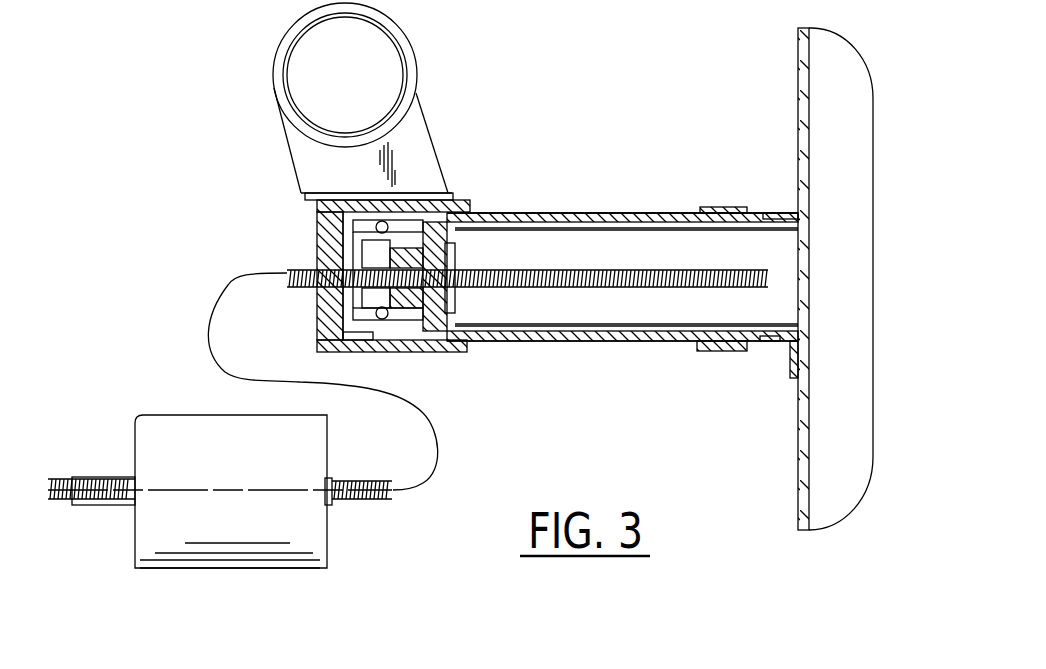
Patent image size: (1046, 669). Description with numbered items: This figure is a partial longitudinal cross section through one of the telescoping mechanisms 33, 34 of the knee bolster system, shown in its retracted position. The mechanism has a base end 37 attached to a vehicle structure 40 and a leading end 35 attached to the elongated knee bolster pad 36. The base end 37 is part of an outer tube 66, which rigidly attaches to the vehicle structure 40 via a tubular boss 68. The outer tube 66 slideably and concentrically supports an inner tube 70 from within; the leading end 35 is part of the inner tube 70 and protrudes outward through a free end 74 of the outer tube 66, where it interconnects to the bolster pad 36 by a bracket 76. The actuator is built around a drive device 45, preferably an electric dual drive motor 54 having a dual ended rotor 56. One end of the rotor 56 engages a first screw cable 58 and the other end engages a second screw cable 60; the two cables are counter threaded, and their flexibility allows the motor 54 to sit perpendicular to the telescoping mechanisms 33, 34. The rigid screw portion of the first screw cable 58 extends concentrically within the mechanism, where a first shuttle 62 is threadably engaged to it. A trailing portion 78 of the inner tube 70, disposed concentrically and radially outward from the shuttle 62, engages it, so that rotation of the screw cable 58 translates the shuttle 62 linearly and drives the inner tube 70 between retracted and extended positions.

The first telescoping mechanism 33 is at (640, 212).
The second telescoping mechanism 34 is at (640, 212).
The leading end 35 is at (780, 233).
The knee bolster pad 36 is at (845, 70).
The base end 37 is at (360, 338).
The vehicle structure 40 is at (412, 107).
The drive device 45 is at (211, 575).
The electric dual drive motor 54 is at (133, 543).
The dual ended rotor 56 is at (95, 477).
The first screw cable 58 is at (687, 292).
The second screw cable 60 is at (100, 505).
The first shuttle 62 is at (407, 313).
The outer tube 66 is at (587, 213).
The tubular boss 68 is at (450, 353).
The inner tube 70 is at (654, 232).
The free end 74 is at (722, 208).
The bracket 76 is at (790, 372).
The trailing portion 78 is at (445, 213).